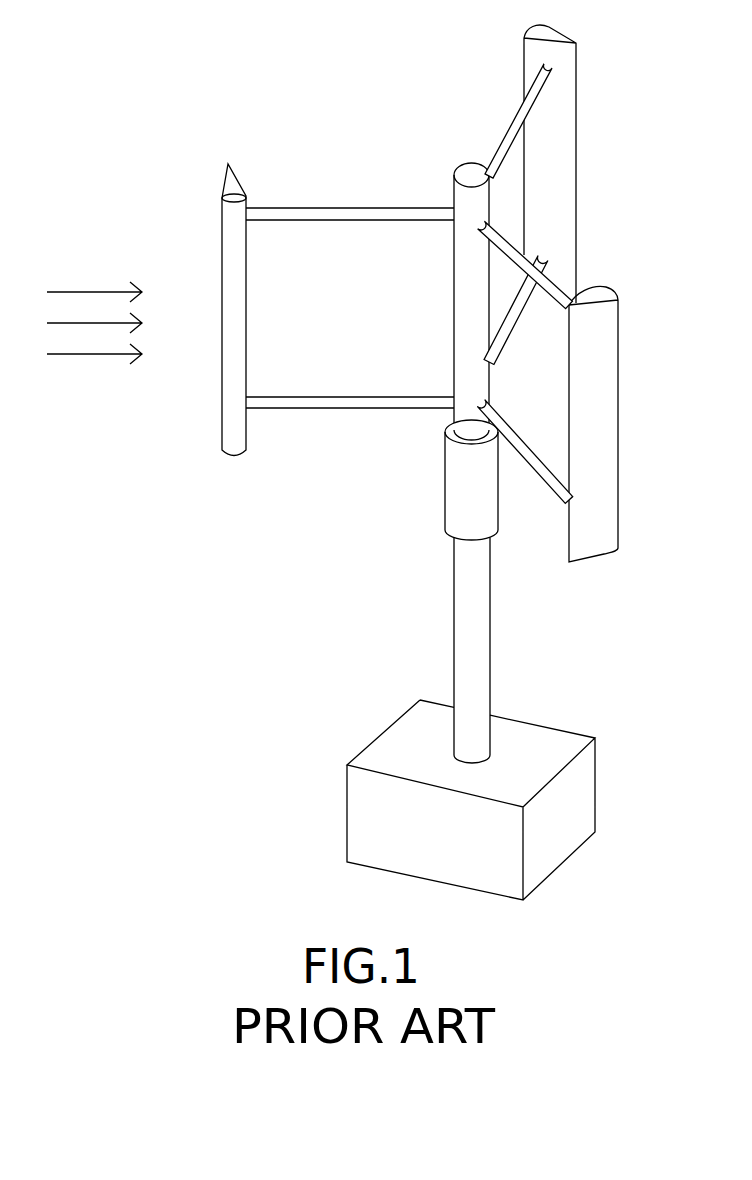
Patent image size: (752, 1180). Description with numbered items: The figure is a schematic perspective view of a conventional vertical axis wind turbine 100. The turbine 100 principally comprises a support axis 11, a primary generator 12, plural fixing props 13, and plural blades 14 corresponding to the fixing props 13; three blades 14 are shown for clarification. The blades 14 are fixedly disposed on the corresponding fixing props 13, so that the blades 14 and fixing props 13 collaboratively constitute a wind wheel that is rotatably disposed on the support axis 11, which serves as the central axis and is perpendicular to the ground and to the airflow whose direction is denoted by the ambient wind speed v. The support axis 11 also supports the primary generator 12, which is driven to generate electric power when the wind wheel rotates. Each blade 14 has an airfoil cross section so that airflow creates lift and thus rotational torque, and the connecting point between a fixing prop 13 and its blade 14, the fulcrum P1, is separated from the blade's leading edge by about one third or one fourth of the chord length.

The vertical axis wind turbine 100 is at (338, 69).
The support axis 11 is at (475, 658).
The primary generator 12 is at (459, 492).
The fixing prop 13 is at (361, 213).
The blade 14 is at (232, 270).
The fulcrum P1 is at (548, 65).